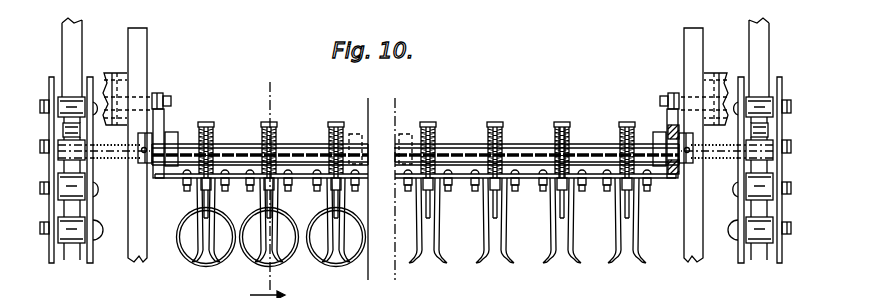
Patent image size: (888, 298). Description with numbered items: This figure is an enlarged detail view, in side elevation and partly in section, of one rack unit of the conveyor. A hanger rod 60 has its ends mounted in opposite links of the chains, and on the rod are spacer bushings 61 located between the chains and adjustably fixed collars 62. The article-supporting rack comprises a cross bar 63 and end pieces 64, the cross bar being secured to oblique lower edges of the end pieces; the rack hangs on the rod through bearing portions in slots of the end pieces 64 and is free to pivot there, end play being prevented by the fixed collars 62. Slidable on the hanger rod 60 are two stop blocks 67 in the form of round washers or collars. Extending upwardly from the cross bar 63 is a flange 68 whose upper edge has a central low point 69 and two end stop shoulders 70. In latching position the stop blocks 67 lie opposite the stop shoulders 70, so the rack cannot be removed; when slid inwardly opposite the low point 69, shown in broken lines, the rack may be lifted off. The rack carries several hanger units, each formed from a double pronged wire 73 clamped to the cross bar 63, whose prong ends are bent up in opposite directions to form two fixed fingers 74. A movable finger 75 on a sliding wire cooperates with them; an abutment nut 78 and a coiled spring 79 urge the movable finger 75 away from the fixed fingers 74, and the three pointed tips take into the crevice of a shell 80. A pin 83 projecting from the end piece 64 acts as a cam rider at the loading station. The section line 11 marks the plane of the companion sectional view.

The section line 11 is at (322, 188).
The hanger rod 60 is at (228, 144).
The spacer bushings 61 is at (105, 157).
The fixed collars 62 is at (148, 134).
The cross bar 63 is at (530, 180).
The end pieces 64 is at (163, 93).
The stop blocks 67 is at (176, 133).
The flange 68 is at (528, 170).
The low point 69 is at (457, 143).
The stop shoulders 70 is at (237, 170).
The double pronged wire 73 is at (635, 232).
The fixed fingers 74 is at (437, 263).
The movable finger 75 is at (430, 210).
The abutment nut 78 is at (562, 122).
The coiled spring 79 is at (566, 140).
The shell 80 is at (334, 266).
The cam rider pin 83 is at (680, 95).